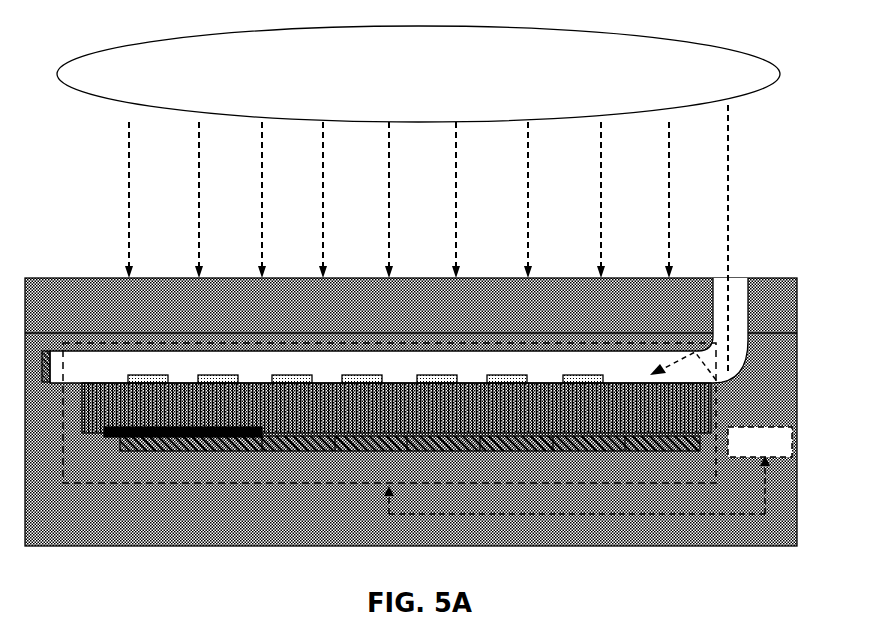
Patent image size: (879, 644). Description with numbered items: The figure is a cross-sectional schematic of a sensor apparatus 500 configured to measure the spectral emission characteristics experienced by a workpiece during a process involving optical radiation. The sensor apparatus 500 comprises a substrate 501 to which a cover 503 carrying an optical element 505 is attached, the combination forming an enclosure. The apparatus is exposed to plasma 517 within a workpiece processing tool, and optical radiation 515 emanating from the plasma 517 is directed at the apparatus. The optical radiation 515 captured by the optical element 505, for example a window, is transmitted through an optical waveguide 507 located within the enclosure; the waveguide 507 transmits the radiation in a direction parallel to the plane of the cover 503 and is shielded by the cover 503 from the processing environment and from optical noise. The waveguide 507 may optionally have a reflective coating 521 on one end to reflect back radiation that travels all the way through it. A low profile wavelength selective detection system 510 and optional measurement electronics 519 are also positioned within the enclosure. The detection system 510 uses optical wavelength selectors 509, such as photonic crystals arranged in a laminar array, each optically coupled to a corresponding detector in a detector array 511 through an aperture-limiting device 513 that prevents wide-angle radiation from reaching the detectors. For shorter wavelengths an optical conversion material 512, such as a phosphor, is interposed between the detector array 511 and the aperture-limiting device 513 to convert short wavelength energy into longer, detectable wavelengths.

The sensor apparatus 500 is at (77, 42).
The substrate 501 is at (131, 534).
The cover 503 is at (411, 305).
The optical element 505 is at (748, 310).
The optical waveguide 507 is at (84, 355).
The optical wavelength selectors 509 is at (162, 375).
The wavelength selective detection system 510 is at (228, 484).
The detector array 511 is at (310, 452).
The optical conversion material 512 is at (112, 438).
The aperture-limiting device 513 is at (653, 415).
The optical radiation 515 is at (734, 241).
The plasma 517 is at (648, 46).
The measurement electronics 519 is at (760, 427).
The reflective coating 521 is at (44, 383).